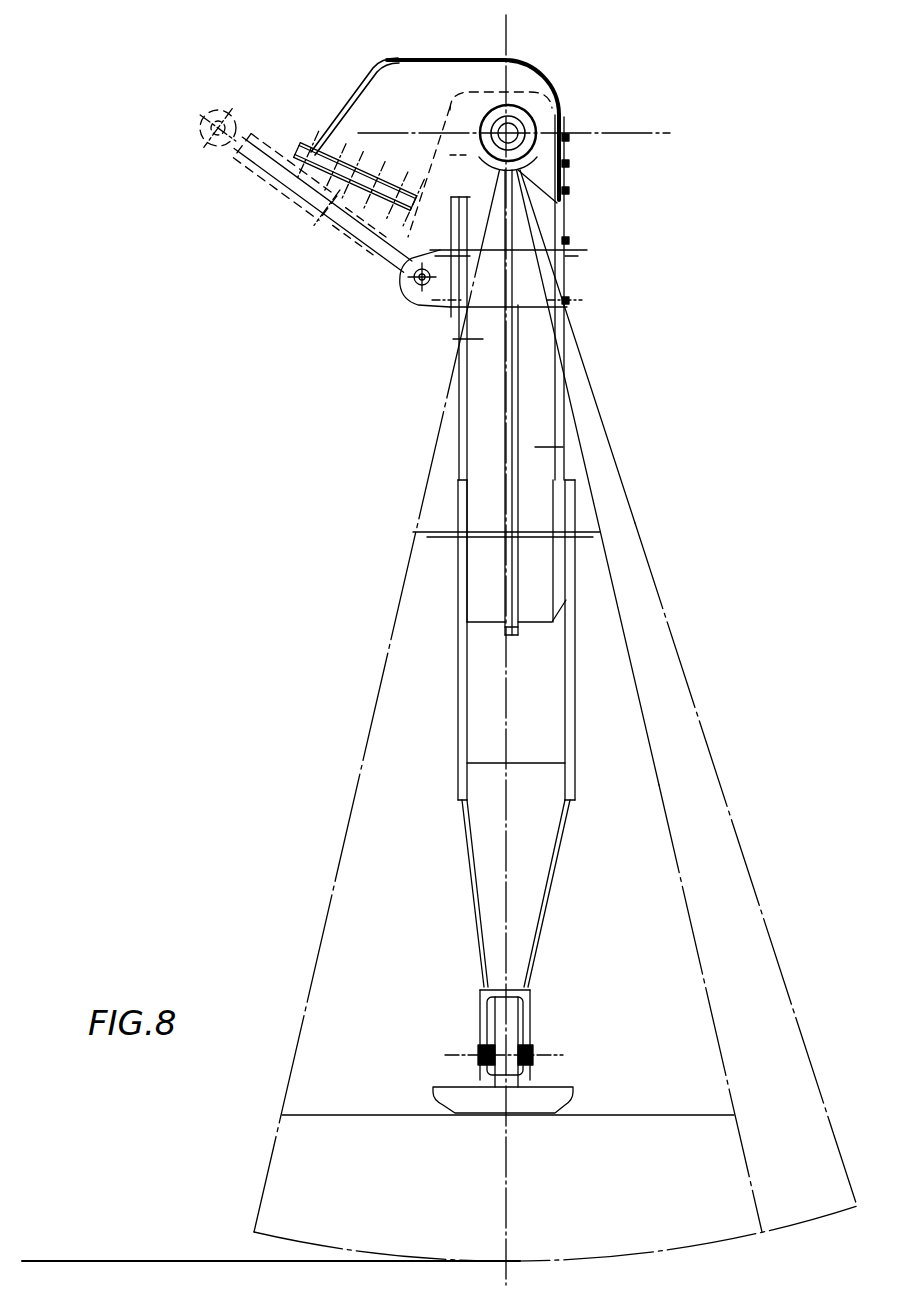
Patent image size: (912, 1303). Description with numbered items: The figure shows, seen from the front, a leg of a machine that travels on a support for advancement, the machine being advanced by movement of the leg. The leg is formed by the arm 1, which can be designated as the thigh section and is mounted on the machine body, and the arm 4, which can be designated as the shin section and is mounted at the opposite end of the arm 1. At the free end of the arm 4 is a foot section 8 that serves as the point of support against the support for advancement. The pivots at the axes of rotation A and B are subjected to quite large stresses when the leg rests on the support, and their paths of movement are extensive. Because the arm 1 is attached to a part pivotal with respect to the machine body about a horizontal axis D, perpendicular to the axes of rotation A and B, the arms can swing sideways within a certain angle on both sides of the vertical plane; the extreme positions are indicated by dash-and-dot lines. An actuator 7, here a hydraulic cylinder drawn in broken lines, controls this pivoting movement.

The arm 1 is at (482, 426).
The arm 4 is at (460, 697).
The actuator 7 is at (282, 195).
The foot section 8 is at (577, 1102).
The axis of rotation A is at (587, 250).
The axis of rotation B is at (440, 537).
The horizontal axis D is at (415, 223).